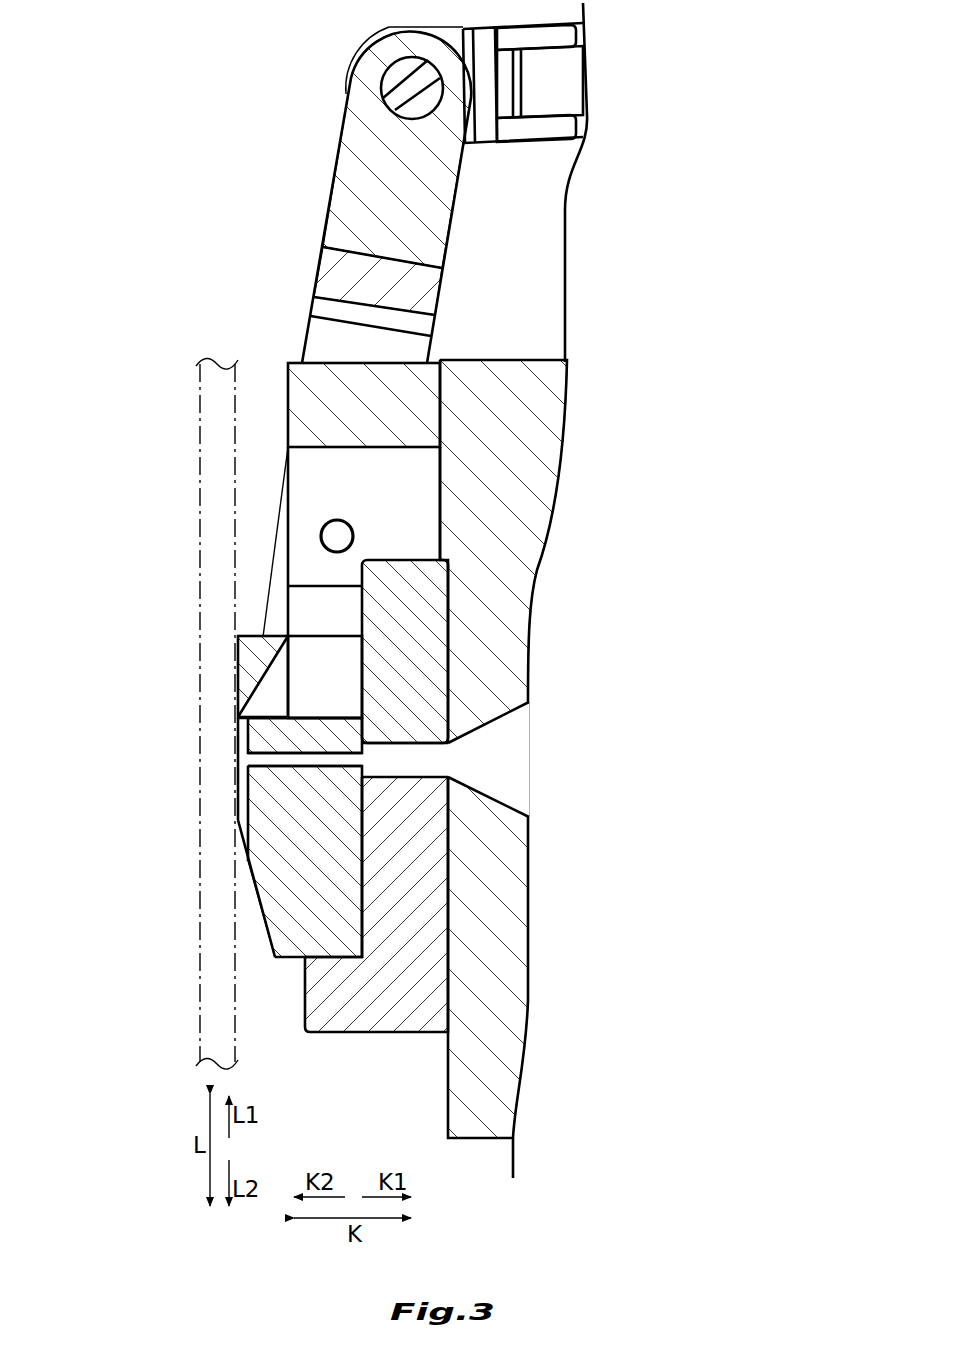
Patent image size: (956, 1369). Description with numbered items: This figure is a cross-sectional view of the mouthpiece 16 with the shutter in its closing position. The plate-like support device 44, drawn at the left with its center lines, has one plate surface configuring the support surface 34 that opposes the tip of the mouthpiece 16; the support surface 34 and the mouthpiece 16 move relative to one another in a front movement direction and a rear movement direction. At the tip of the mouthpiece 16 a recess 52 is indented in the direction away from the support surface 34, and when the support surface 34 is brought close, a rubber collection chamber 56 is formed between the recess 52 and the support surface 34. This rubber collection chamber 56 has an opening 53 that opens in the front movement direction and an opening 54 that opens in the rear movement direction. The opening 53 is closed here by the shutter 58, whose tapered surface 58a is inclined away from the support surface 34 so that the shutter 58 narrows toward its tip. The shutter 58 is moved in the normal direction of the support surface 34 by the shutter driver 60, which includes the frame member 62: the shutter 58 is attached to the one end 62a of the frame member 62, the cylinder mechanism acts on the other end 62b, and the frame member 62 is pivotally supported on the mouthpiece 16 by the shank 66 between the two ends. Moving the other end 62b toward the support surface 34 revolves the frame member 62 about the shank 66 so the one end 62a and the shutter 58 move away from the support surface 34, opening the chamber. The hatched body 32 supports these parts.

The mouthpiece 16 is at (276, 990).
The body 32 is at (307, 767).
The support surface 34 is at (250, 878).
The support device 44 is at (215, 1015).
The recess 52 is at (247, 808).
The opening 53 is at (238, 727).
The opening 54 is at (240, 857).
The rubber collection chamber 56 is at (243, 780).
The shutter 58 is at (278, 668).
The tapered surface 58a is at (250, 660).
The shutter driver 60 is at (303, 220).
The frame member 62 is at (384, 334).
The one end 62a is at (265, 635).
The other end 62b is at (445, 293).
The shank 66 is at (335, 530).